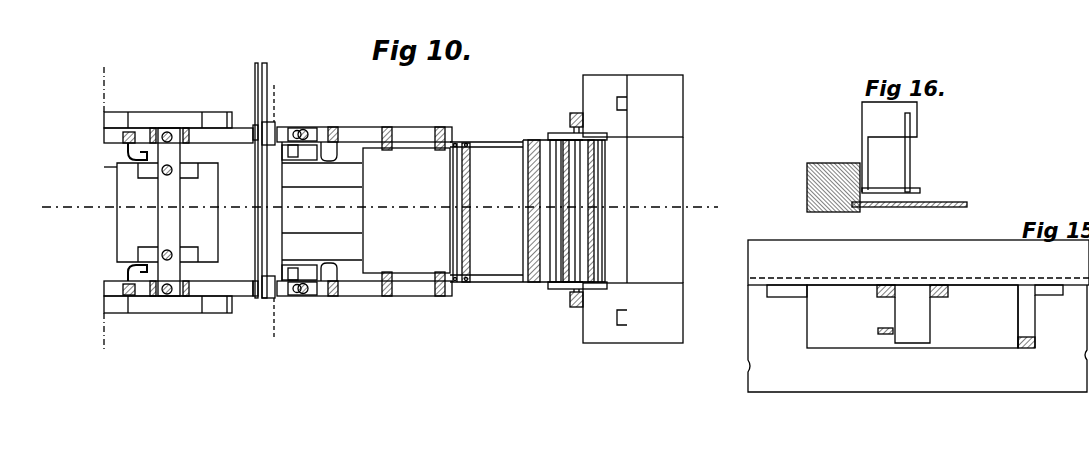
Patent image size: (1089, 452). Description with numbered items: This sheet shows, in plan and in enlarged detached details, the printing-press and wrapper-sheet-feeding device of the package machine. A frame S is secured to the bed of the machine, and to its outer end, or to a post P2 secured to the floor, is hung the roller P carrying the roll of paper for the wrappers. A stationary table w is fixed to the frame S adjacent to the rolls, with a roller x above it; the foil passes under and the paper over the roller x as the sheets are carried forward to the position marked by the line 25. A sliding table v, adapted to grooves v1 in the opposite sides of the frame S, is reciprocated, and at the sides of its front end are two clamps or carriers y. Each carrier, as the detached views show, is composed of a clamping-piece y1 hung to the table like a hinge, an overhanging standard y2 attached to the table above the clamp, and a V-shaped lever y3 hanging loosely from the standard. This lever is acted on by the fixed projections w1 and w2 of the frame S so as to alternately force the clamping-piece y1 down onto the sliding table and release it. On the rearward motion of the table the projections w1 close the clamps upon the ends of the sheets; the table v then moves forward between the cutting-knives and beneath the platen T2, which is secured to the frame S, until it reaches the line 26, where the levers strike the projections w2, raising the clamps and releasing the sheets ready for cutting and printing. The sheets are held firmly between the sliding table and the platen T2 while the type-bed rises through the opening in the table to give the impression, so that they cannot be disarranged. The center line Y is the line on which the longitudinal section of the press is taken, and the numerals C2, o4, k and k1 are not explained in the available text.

In FIG. 10, the section line Y Y is at (378, 208).
In FIG. 10, the line 26 26 is at (101, 210).
In FIG. 10, the line 25 25 is at (268, 209).
In FIG. 10, the frame S is at (222, 108).
In FIG. 16, the frame S is at (825, 187).
In FIG. 15, the frame S is at (748, 250).
In FIG. 10, the platen T2 is at (167, 212).
In FIG. 10, the clamp C2 is at (103, 164).
In FIG. 10, the fixed projection w2 is at (126, 212).
In FIG. 10, the sliding table v is at (364, 211).
In FIG. 15, the sliding table v is at (917, 338).
In FIG. 10, the grooves v1 is at (350, 271).
In FIG. 16, the grooves v1 is at (866, 210).
In FIG. 10, the screw o4 is at (308, 128).
In FIG. 10, the clamps or carriers y is at (290, 160).
In FIG. 16, the clamps or carriers y is at (875, 147).
In FIG. 15, the clamps or carriers y is at (897, 316).
In FIG. 10, the overhanging standard y2 is at (300, 160).
In FIG. 16, the overhanging standard y2 is at (884, 119).
In FIG. 15, the overhanging standard y2 is at (912, 314).
In FIG. 16, the V-shaped lever y3 is at (910, 160).
In FIG. 15, the V-shaped lever y3 is at (879, 332).
In FIG. 16, the clamping-piece y1 is at (891, 184).
In FIG. 15, the clamping-piece y1 is at (998, 316).
In FIG. 10, the fixed projection w1 is at (329, 211).
In FIG. 10, the stationary table w is at (434, 210).
In FIG. 10, the roller x is at (480, 212).
In FIG. 10, the roller P is at (565, 211).
In FIG. 10, the post P2 is at (633, 209).
In FIG. 10, the lower shaft journal k is at (574, 309).
In FIG. 10, the upper shaft journal k1 is at (570, 114).